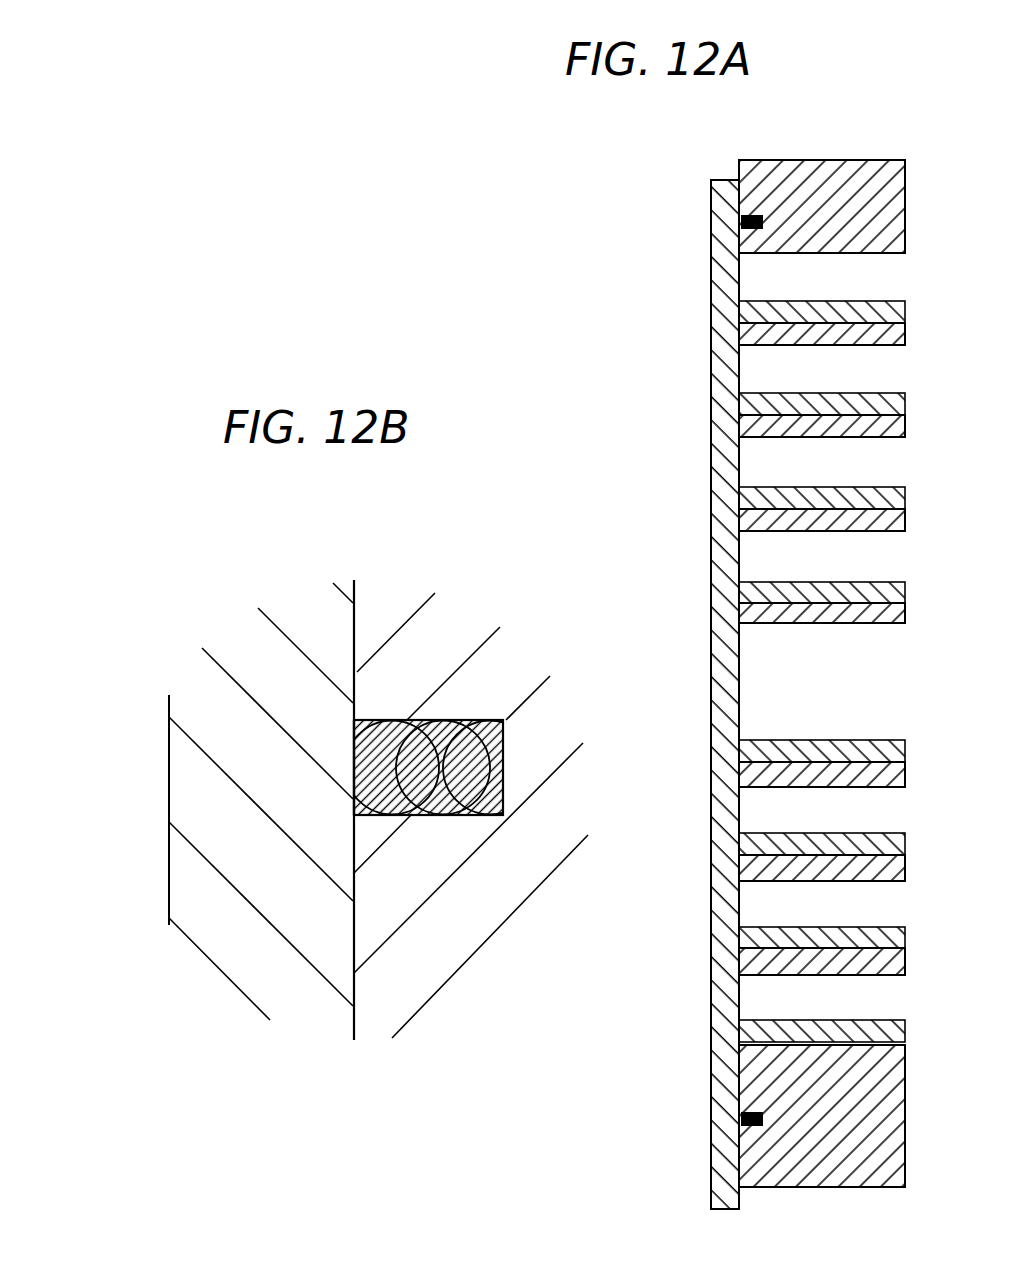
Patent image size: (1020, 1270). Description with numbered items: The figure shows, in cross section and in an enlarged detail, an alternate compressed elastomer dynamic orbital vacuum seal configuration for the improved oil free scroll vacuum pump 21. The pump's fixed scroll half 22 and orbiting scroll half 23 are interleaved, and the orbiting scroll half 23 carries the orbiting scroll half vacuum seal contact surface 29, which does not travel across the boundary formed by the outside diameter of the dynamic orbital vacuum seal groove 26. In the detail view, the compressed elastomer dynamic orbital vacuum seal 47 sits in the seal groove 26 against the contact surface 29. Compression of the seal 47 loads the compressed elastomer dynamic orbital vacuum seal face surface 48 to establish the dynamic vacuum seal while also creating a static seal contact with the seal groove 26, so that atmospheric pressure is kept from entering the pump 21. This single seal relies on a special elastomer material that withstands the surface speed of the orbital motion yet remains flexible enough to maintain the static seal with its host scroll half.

In FIG. 12A, the improved oil free scroll vacuum pump 21 is at (760, 157).
In FIG. 12B, the fixed scroll half 22 is at (472, 938).
In FIG. 12B, the orbiting scroll half 23 is at (240, 735).
In FIG. 12B, the dynamic orbital vacuum seal groove 26 is at (503, 758).
In FIG. 12B, the orbiting scroll half vacuum seal contact surface 29 is at (354, 623).
In FIG. 12B, the compressed elastomer dynamic orbital vacuum seal 47 is at (443, 728).
In FIG. 12B, the compressed elastomer dynamic orbital vacuum seal face surface 48 is at (353, 770).